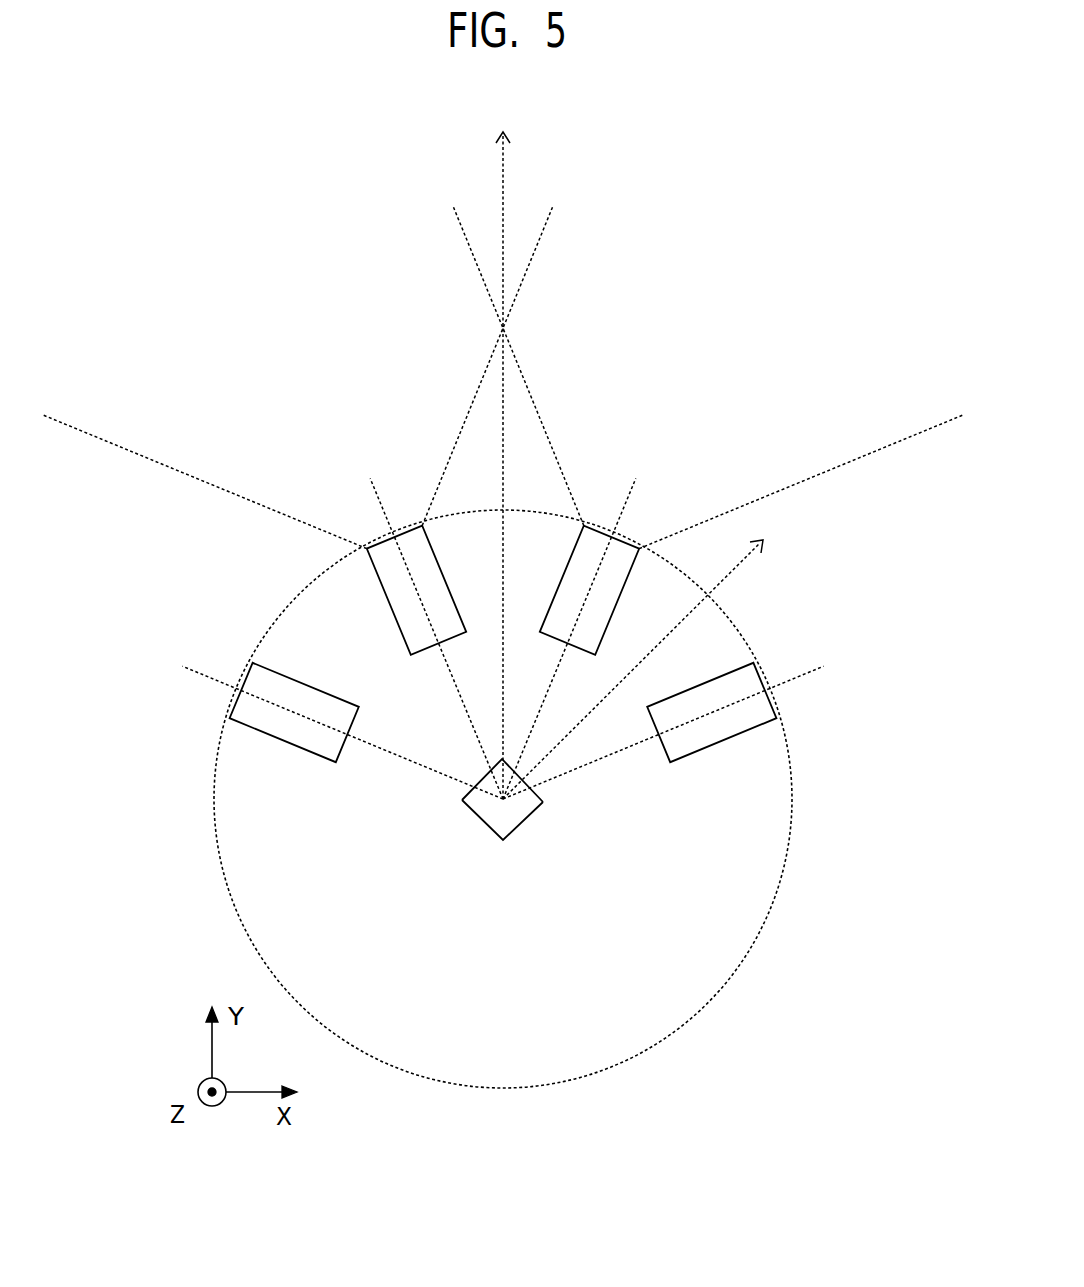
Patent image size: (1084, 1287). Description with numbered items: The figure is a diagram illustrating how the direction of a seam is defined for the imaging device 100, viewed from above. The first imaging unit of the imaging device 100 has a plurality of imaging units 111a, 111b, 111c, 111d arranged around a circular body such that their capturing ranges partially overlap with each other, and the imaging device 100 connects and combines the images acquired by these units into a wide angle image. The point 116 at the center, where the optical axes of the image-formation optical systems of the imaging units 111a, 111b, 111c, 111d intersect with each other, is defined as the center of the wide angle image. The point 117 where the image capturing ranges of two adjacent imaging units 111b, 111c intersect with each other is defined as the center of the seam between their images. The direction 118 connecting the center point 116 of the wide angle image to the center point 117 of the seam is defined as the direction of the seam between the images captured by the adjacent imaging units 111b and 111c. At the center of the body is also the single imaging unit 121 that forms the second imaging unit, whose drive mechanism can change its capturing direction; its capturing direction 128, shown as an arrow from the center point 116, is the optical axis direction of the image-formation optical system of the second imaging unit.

The imaging device 100 is at (823, 823).
The imaging unit 111a is at (285, 742).
The imaging unit 111b is at (412, 654).
The imaging unit 111c is at (594, 654).
The imaging unit 111d is at (721, 742).
The point (center of the wide angle image) 116 is at (506, 799).
The point (center of the seam) 117 is at (503, 330).
The direction of a seam 118 is at (502, 165).
The imaging unit 121 is at (507, 831).
The capturing direction 128 is at (743, 562).